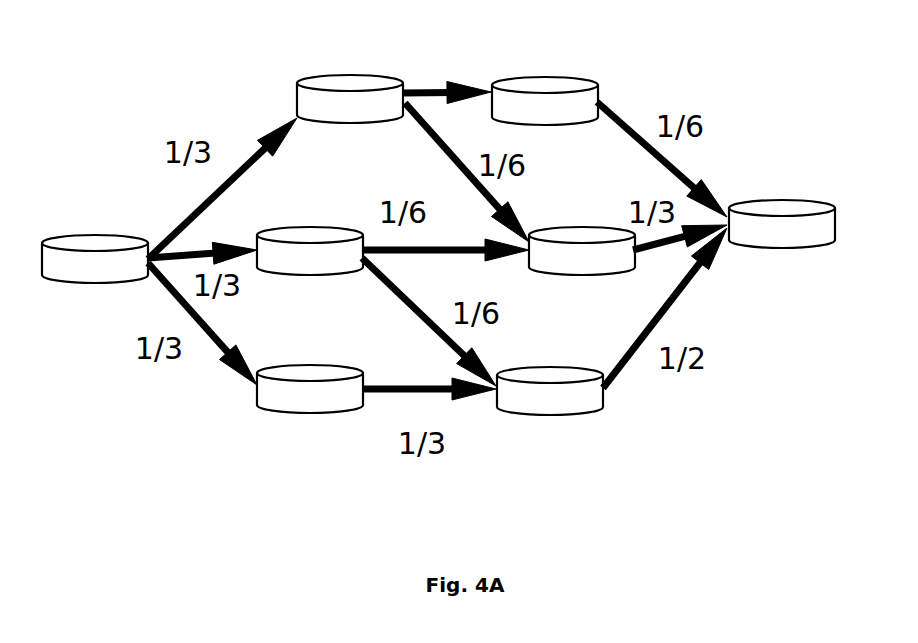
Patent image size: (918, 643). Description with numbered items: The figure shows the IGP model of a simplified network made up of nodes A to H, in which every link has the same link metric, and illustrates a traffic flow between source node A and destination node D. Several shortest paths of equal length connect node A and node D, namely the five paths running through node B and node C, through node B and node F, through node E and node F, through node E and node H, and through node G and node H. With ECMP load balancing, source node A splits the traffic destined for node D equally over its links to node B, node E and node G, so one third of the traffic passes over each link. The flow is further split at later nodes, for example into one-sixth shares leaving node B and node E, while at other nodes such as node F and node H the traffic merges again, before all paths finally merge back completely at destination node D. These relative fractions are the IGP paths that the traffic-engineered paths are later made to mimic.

The source node A is at (95, 259).
The node B is at (350, 99).
The node C is at (545, 101).
The destination node D is at (782, 224).
The node E is at (310, 251).
The node F is at (582, 251).
The node G is at (310, 389).
The node H is at (550, 391).